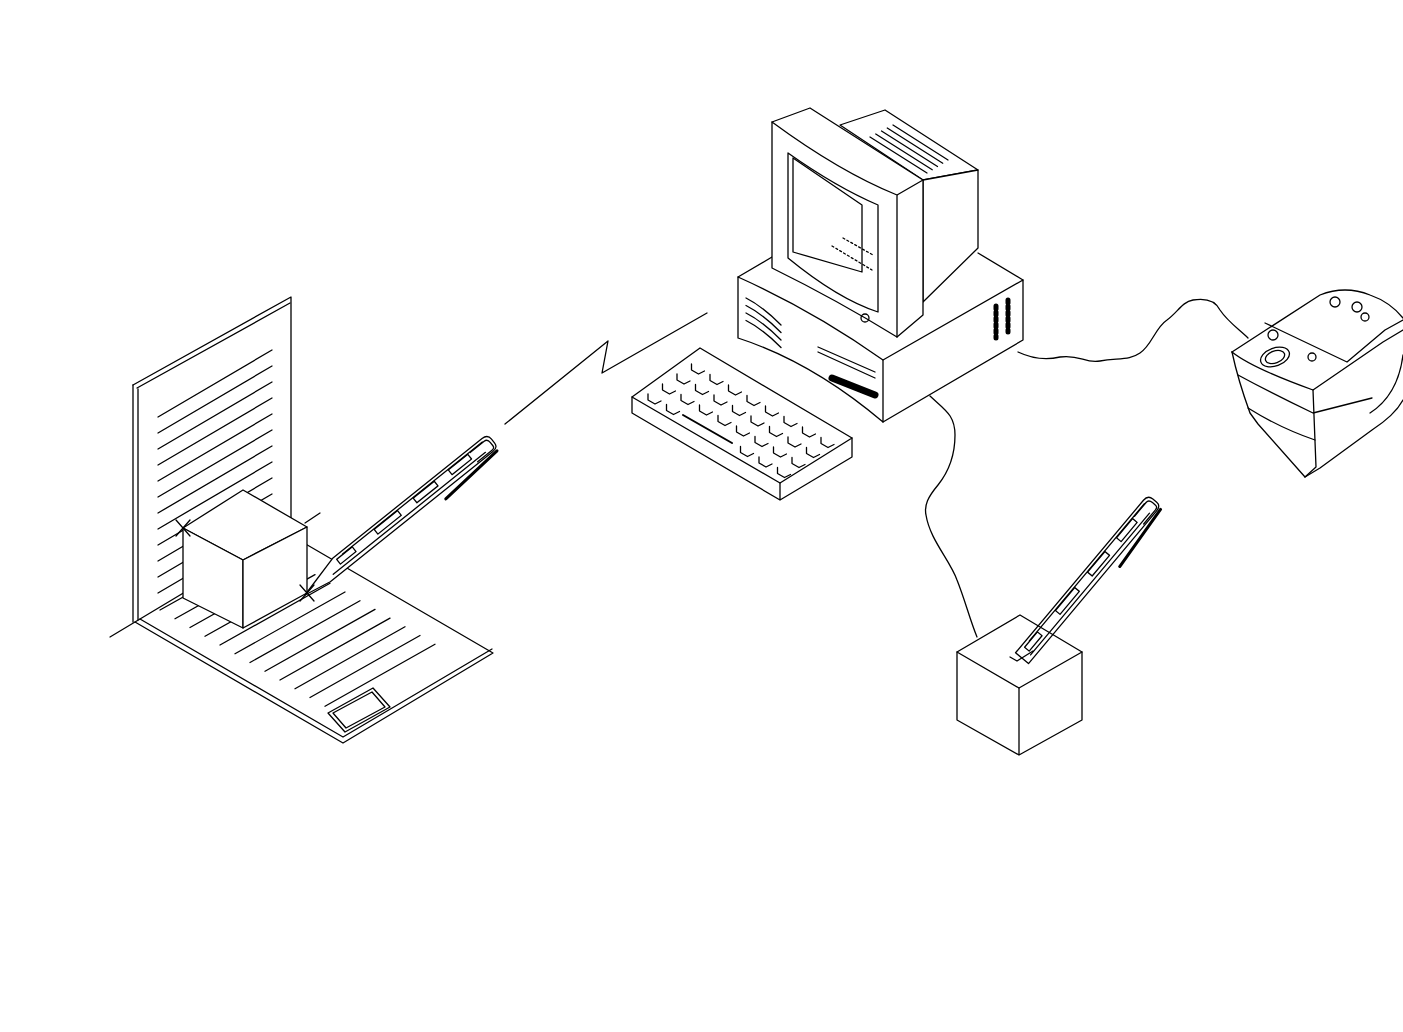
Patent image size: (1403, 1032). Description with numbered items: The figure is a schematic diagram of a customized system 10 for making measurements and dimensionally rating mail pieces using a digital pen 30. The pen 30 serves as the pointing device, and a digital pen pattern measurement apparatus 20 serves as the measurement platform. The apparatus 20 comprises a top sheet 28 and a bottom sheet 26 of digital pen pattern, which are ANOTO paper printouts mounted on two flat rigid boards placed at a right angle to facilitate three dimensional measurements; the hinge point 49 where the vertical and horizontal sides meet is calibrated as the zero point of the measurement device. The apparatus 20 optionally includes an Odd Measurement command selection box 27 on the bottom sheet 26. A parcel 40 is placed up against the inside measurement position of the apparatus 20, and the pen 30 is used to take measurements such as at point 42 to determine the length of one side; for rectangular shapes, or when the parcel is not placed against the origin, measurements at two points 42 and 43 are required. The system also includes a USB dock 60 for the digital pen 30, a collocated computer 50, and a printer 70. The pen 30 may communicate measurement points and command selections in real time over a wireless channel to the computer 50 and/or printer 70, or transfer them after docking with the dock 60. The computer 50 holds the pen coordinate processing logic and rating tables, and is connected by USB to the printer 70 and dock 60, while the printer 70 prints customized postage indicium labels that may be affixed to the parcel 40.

The system 10 is at (405, 205).
The digital pen pattern measurement apparatus 20 is at (339, 523).
The bottom sheet 26 is at (344, 654).
The Odd Measurement command selection box 27 is at (383, 710).
The top sheet 28 is at (284, 371).
The digital pen 30 is at (405, 492).
The parcel 40 is at (262, 603).
The measurement point 42 is at (307, 593).
The measurement point 43 is at (183, 528).
The hinge point 49 is at (335, 497).
The computer 50 is at (777, 190).
The USB dock 60 is at (1065, 697).
The printer 70 is at (1318, 296).